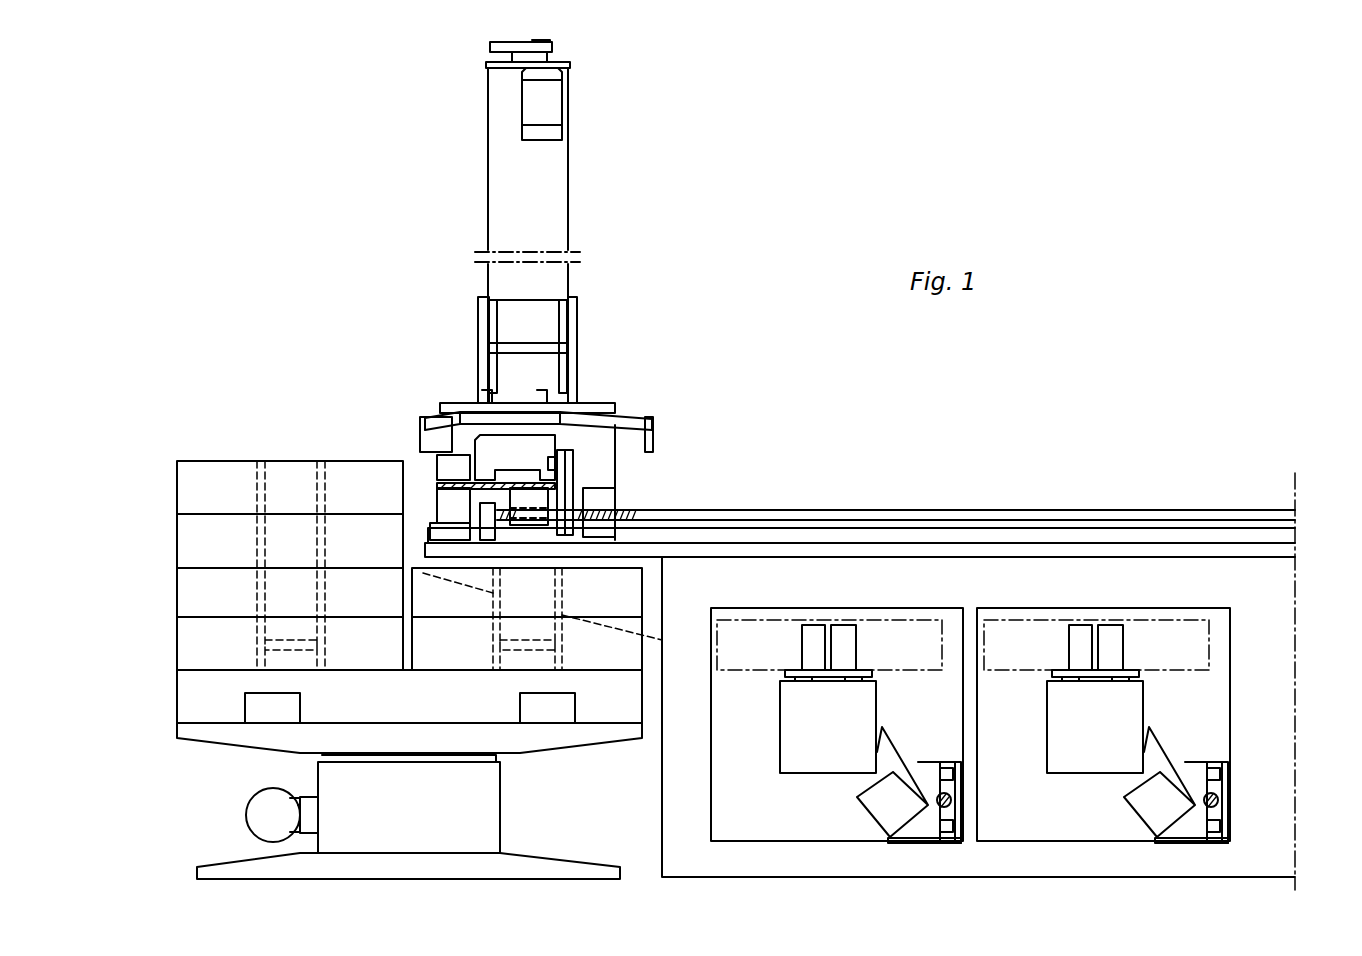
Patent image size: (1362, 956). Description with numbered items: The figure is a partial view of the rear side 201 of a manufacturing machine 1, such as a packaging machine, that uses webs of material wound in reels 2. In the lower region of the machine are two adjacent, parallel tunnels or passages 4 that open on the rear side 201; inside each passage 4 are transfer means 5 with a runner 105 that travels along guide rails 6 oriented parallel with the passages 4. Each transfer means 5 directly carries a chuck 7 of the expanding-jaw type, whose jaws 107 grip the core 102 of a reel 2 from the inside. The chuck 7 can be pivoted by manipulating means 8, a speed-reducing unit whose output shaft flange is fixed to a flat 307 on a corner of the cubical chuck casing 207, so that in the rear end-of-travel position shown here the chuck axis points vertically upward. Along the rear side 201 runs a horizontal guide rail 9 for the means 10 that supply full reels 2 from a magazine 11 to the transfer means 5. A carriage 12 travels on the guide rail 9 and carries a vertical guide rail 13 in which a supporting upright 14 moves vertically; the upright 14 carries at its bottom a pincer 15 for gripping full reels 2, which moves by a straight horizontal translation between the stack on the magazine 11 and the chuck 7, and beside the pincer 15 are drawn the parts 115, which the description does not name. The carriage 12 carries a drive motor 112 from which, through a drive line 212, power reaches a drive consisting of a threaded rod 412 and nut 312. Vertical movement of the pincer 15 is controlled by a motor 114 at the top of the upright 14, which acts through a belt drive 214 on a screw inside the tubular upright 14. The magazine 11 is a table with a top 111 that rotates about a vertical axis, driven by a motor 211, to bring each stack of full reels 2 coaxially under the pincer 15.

The manufacturing machine 1 is at (1312, 586).
The reel 2 is at (185, 528).
The tunnel or passage 4 is at (764, 830).
The transfer means 5 is at (902, 852).
The guide rail 6 is at (950, 774).
The chuck 7 is at (766, 698).
The manipulating means 8 is at (875, 812).
The horizontal guide rail 9 is at (971, 508).
The means for supplying full reels 10 is at (590, 352).
The magazine 11 is at (172, 680).
The carriage 12 is at (615, 500).
The vertical guide rail 13 is at (577, 312).
The supporting upright 14 is at (560, 155).
The pincer 15 is at (666, 436).
The core 102 is at (255, 478).
The runner 105 is at (946, 845).
The expanding jaws 107 is at (848, 620).
The table top 111 is at (185, 712).
The drive motor 112 is at (485, 445).
The motor 114 is at (555, 102).
The guide block 115 is at (424, 428).
The rear side 201 is at (1282, 641).
The chuck casing 207 is at (786, 748).
The motor 211 is at (270, 810).
The drive line 212 is at (592, 475).
The belt drive 214 is at (480, 56).
The flat 307 is at (866, 776).
The nut 312 is at (532, 528).
The threaded rod 412 is at (783, 512).